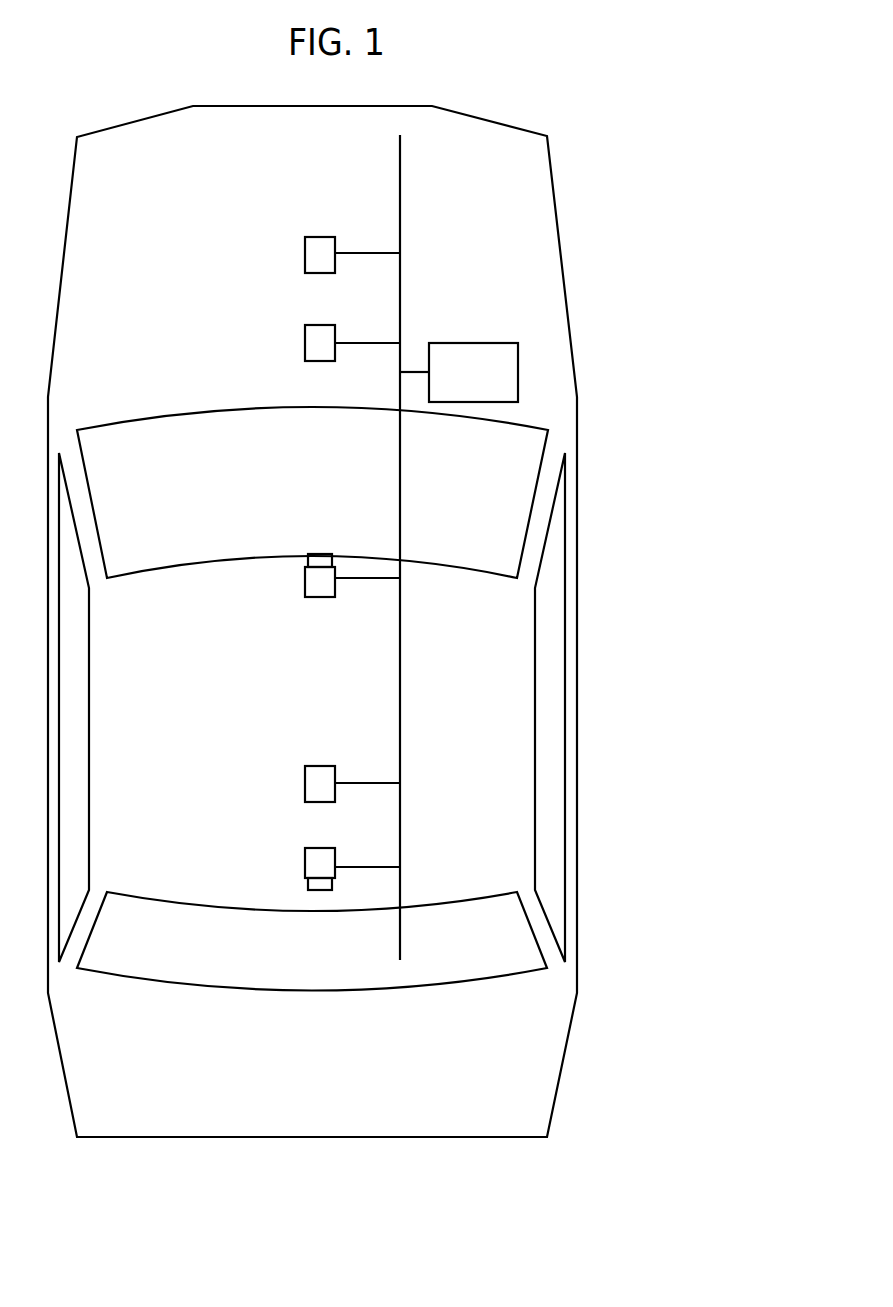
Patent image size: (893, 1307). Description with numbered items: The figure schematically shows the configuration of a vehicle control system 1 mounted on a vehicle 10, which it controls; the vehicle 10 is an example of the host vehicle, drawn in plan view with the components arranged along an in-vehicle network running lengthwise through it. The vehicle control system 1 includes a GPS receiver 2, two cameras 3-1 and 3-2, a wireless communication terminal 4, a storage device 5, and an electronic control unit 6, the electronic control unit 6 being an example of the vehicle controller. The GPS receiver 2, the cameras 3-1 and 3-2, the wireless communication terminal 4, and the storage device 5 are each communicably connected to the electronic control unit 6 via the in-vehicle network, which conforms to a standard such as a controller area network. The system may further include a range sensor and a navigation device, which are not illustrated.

The vehicle control system 1 is at (724, 1110).
The vehicle 10 is at (577, 948).
The GPS receiver 2 is at (305, 782).
The camera 3-1 is at (305, 580).
The camera 3-2 is at (305, 862).
The wireless communication terminal 4 is at (305, 252).
The storage device 5 is at (305, 342).
The electronic control unit 6 is at (518, 375).